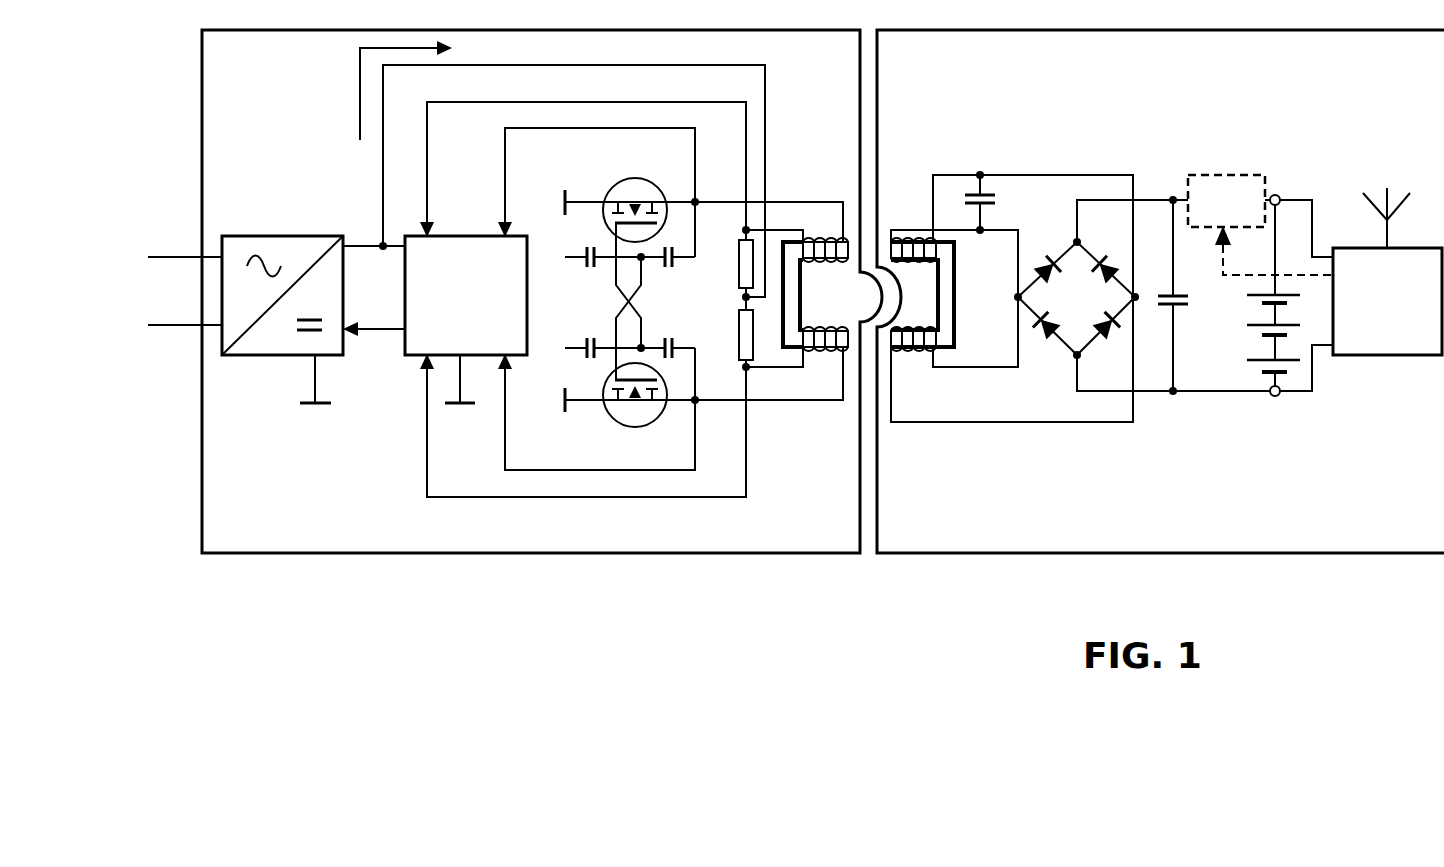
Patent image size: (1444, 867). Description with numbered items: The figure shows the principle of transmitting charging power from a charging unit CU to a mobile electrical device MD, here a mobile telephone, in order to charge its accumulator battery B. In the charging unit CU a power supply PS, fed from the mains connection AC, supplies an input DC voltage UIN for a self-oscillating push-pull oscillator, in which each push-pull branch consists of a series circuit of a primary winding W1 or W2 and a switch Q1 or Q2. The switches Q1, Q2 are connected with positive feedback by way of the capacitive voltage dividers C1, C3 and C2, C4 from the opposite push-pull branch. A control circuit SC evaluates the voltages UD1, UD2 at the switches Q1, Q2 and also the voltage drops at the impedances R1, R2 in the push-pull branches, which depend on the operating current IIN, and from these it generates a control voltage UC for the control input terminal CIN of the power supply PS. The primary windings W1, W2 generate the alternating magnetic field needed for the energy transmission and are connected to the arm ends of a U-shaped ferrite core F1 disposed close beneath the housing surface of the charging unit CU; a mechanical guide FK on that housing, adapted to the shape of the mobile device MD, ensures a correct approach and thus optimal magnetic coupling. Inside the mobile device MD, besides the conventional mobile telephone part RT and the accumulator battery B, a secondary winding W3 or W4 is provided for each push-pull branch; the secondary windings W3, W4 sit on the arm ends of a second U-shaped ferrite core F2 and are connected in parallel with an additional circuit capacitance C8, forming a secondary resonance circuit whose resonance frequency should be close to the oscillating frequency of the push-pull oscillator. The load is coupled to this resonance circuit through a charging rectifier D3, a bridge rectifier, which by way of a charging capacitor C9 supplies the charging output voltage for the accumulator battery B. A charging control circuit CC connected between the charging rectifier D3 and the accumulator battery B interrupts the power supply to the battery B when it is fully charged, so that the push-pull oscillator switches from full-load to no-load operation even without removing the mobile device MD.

The charging unit CU is at (542, 291).
The mobile electrical device MD is at (1160, 291).
The AC mains input AC is at (176, 291).
The power supply PS is at (282, 302).
The control circuit SC is at (466, 319).
The input DC voltage UIN is at (364, 218).
The operating current IIN is at (387, 90).
The control voltage UC is at (374, 313).
The control input terminal CIN is at (369, 357).
The voltage by way of switch Q1 UD1 is at (583, 169).
The voltage by way of switch Q2 UD2 is at (583, 425).
The switch Q1 is at (632, 247).
The switch Q2 is at (632, 356).
The capacitor of capacitive voltage divider C1 is at (668, 272).
The capacitor of capacitive voltage divider C2 is at (668, 332).
The capacitor of capacitive voltage divider C3 is at (603, 272).
The capacitor of capacitive voltage divider C4 is at (603, 332).
The impedance R1 is at (727, 263).
The impedance R2 is at (726, 334).
The U-shaped ferrite core F1 is at (809, 294).
The primary winding W1 is at (771, 215).
The primary winding W2 is at (771, 382).
The mechanical guide FK is at (854, 298).
The second U-shaped ferrite core F2 is at (948, 294).
The secondary winding W3 is at (1010, 236).
The secondary winding W4 is at (1012, 359).
The circuit capacitance C8 is at (1004, 202).
The charging rectifier D3 is at (1142, 295).
The charging capacitor C9 is at (1195, 295).
The charging control circuit CC is at (1260, 225).
The accumulator battery B is at (1256, 295).
The mobile telephone part RT is at (1361, 289).